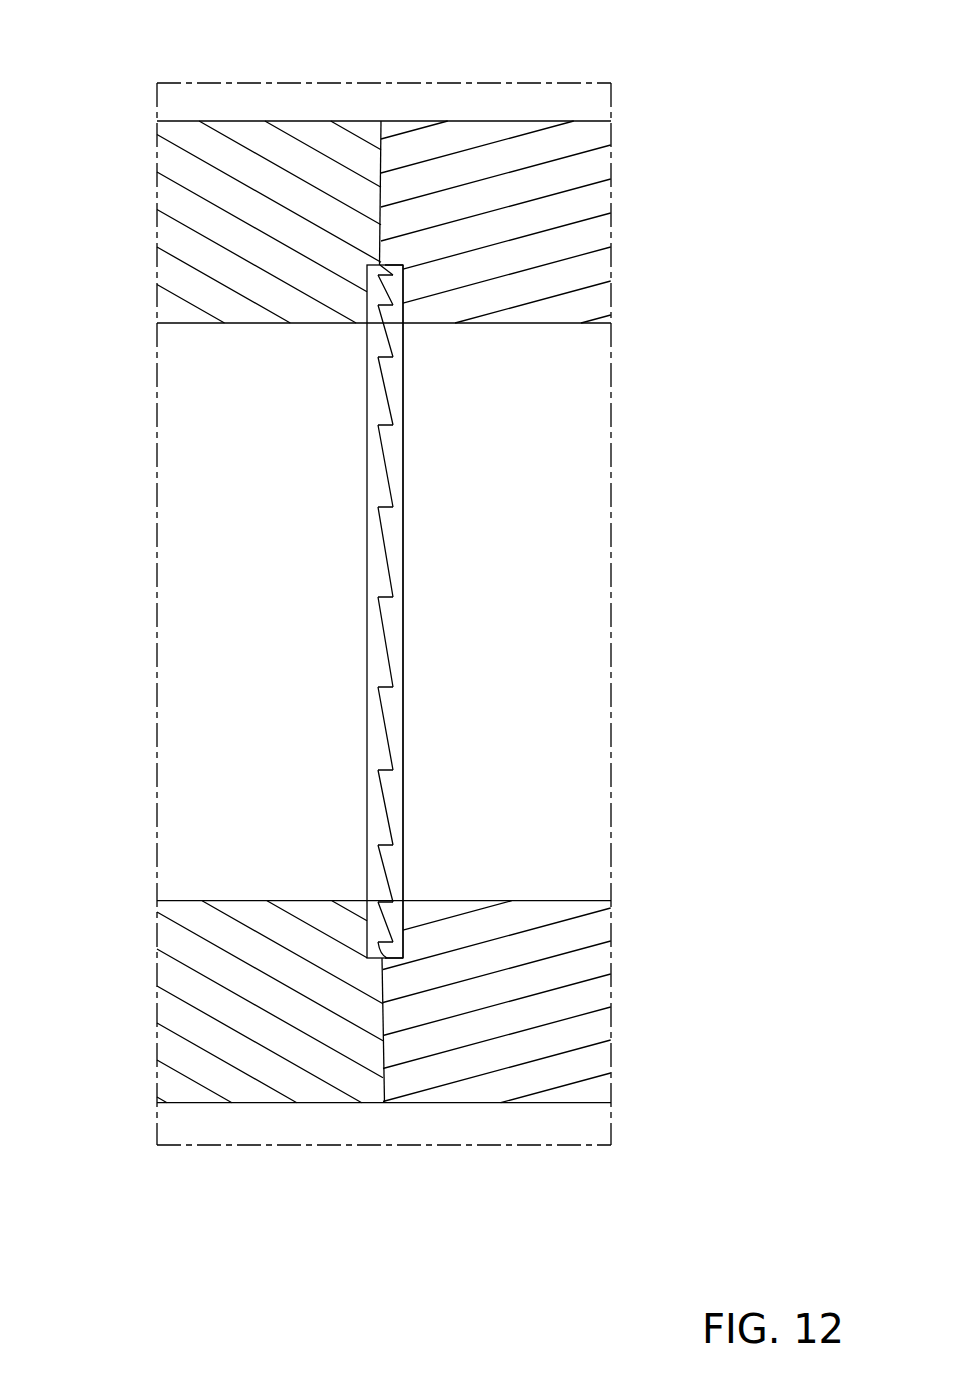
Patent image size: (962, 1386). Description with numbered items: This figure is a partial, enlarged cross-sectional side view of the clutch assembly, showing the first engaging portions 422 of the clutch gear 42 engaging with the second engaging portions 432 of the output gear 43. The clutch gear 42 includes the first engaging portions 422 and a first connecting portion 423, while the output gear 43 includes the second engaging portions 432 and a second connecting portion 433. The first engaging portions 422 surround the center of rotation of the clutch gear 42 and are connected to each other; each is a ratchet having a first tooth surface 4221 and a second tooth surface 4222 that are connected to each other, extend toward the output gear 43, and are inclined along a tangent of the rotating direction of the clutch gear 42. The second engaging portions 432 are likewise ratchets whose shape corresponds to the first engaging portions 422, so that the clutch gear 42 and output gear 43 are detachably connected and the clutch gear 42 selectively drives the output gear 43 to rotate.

The clutch gear 42 is at (140, 70).
The output gear 43 is at (628, 70).
The first engaging portions 422 is at (372, 490).
The first connecting portion 423 is at (270, 178).
The second engaging portions 432 is at (392, 452).
The second connecting portion 433 is at (498, 185).
The first tooth surface 4221 is at (385, 632).
The second tooth surface 4222 is at (385, 689).